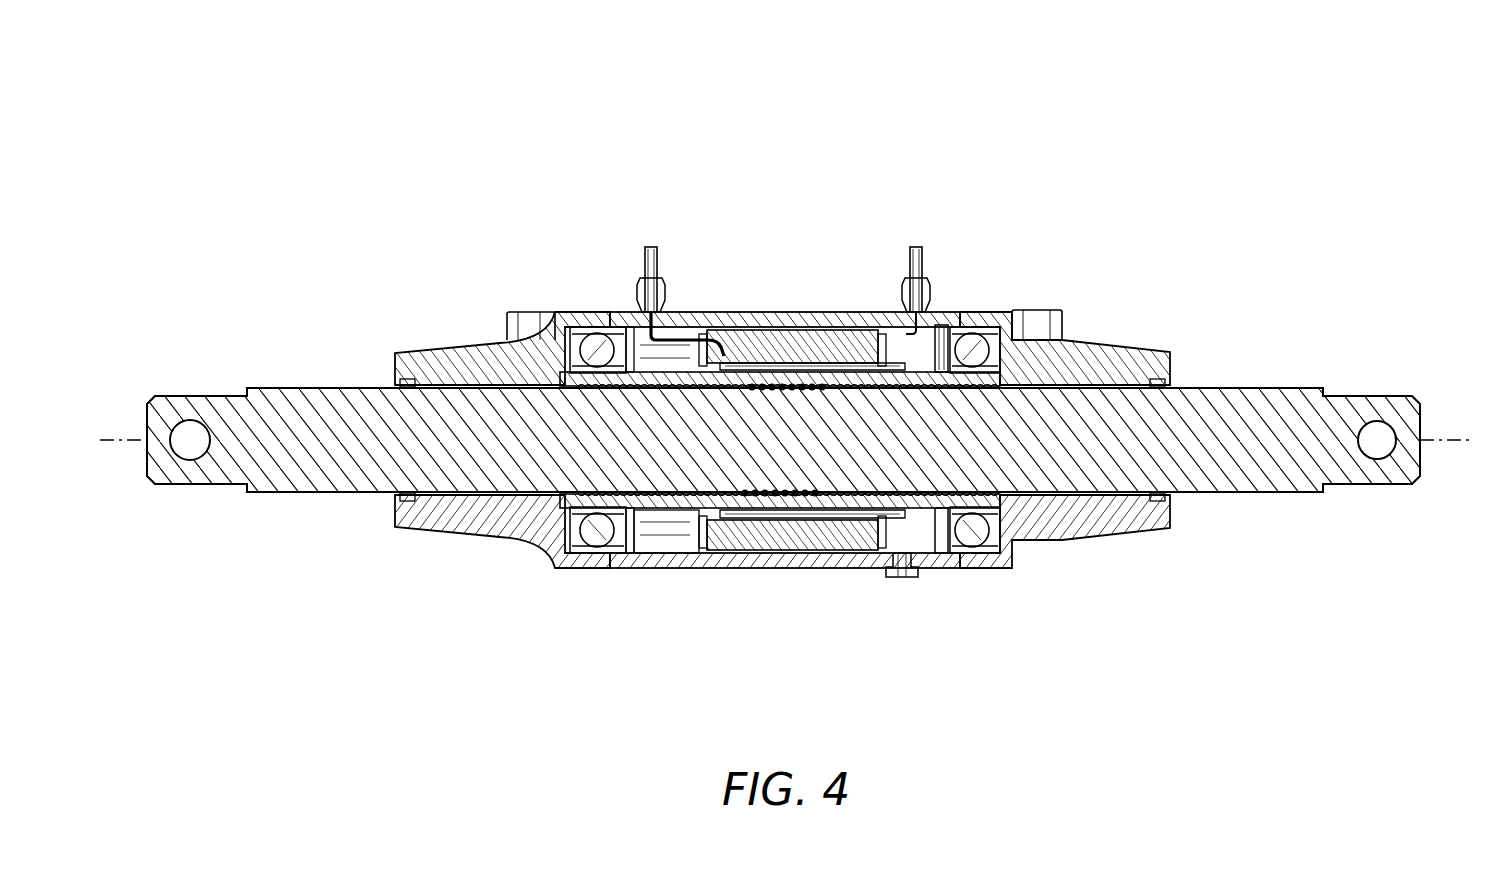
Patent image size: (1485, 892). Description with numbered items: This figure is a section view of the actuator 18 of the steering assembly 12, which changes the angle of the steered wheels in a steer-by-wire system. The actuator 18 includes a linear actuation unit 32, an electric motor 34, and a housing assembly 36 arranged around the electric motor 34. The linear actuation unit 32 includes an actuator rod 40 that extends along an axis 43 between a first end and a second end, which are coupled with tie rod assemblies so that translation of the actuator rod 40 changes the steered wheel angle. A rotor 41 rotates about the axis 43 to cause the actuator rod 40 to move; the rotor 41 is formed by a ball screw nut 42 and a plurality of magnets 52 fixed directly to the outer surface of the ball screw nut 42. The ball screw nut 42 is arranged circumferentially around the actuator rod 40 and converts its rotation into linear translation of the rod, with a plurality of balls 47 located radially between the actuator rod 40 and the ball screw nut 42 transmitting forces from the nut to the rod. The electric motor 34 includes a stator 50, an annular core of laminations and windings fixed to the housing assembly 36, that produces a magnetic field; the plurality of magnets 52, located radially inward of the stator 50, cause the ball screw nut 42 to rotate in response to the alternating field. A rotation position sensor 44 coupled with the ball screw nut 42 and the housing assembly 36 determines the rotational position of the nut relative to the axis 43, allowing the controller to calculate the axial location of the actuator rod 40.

The steering assembly 12 is at (340, 380).
The actuator 18 is at (546, 196).
The linear actuation unit 32 is at (659, 516).
The electric motor 34 is at (737, 318).
The housing assembly 36 is at (505, 324).
The actuator rod 40 is at (1218, 413).
The rotor 41 is at (820, 525).
The ball screw nut 42 is at (865, 520).
The axis 43 is at (1438, 432).
The rotation position sensor 44 is at (942, 323).
The plurality of balls 47 is at (743, 510).
The stator 50 is at (782, 318).
The plurality of magnets 52 is at (903, 516).